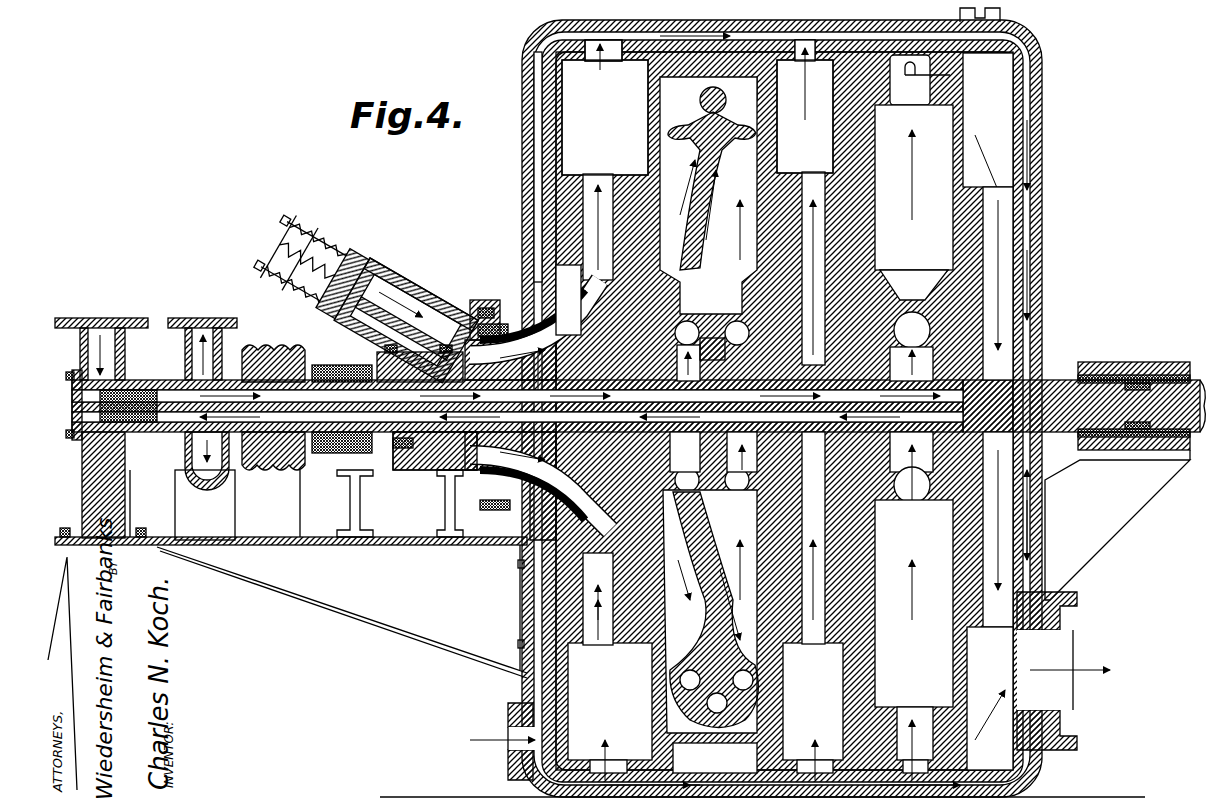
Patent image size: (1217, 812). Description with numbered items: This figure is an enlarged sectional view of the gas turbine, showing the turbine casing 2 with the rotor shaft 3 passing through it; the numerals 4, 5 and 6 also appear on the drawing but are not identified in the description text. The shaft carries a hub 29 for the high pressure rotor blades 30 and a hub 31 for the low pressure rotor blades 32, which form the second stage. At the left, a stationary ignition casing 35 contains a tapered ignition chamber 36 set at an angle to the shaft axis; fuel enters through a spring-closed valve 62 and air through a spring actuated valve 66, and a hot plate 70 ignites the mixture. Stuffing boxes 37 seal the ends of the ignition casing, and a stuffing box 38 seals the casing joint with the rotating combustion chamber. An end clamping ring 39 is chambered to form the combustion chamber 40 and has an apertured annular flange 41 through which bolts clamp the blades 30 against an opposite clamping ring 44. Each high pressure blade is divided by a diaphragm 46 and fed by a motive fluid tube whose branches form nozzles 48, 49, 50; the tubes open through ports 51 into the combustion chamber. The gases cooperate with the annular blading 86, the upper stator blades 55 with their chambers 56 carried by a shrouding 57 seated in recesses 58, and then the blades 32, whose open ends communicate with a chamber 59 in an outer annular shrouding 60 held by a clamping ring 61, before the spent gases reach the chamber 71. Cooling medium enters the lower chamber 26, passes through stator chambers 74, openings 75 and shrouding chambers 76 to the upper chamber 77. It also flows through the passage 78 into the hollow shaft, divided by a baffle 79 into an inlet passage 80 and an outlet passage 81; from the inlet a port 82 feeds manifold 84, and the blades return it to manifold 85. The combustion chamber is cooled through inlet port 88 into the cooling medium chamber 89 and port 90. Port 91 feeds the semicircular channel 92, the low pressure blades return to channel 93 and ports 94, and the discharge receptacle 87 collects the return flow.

The turbine casing 2 is at (1032, 318).
The rotor shaft 3 is at (1160, 450).
The packing block 4 is at (320, 458).
The bearing 5 is at (1130, 383).
The bellows 6 is at (268, 462).
The lower chamber 26 is at (722, 773).
The hub 29 is at (720, 353).
The high pressure rotor blades 30 is at (680, 75).
The hub 31 is at (998, 283).
The low pressure rotor blades 32 is at (965, 125).
The stationary ignition casing 35 is at (436, 267).
The ignition chamber 36 is at (385, 259).
The stuffing boxes 37 is at (500, 518).
The stuffing box 38 is at (505, 298).
The end clamping ring 39 is at (485, 535).
The combustion chamber 40 is at (537, 410).
The apertured annular flange 41 is at (625, 175).
The clamping ring 44 is at (790, 178).
The diaphragm 46 is at (700, 262).
The nozzle 48 is at (713, 88).
The nozzle 49 is at (650, 140).
The nozzle 50 is at (755, 130).
The ports 51 is at (630, 270).
The upper stator blades 55 is at (912, 140).
The chamber 56 is at (605, 107).
The shrouding 57 is at (870, 240).
The recesses 58 is at (822, 72).
The chamber 59 is at (935, 62).
The outer annular shrouding 60 is at (960, 82).
The clamping ring 61 is at (880, 708).
The valve 62 is at (306, 265).
The spring actuated valve 66 is at (358, 266).
The hot plate 70 is at (417, 304).
The chamber 71 is at (990, 601).
The chamber 74 is at (705, 711).
The inner end opening 75 is at (606, 640).
The chambers 76 is at (706, 538).
The upper chamber 77 is at (742, 75).
The passage 78 is at (100, 405).
The baffle 79 is at (162, 425).
The inlet passage 80 is at (380, 380).
The outlet passage 81 is at (740, 492).
The port 82 is at (704, 340).
The manifold 84 is at (688, 492).
The manifold 85 is at (740, 325).
The annular blading 86 is at (715, 758).
The discharge receptacle 87 is at (200, 492).
The inlet port 88 is at (625, 348).
The cooling medium chamber 89 is at (530, 585).
The port 90 is at (648, 450).
The port 91 is at (911, 364).
The semicircular channel 92 is at (912, 330).
The semicircular channel 93 is at (914, 603).
The ports 94 is at (911, 466).